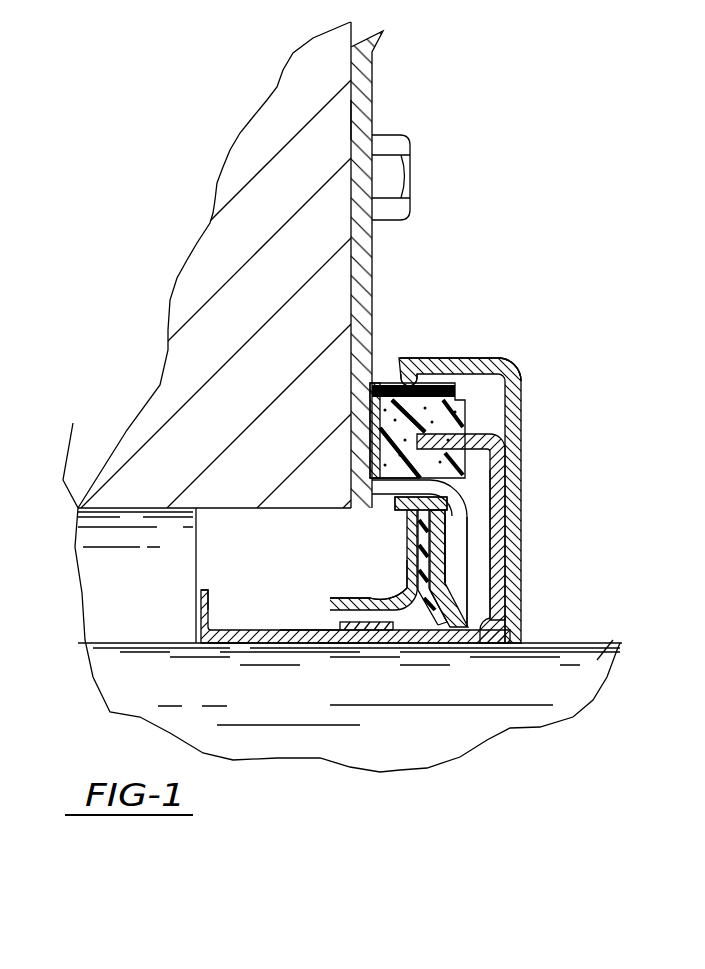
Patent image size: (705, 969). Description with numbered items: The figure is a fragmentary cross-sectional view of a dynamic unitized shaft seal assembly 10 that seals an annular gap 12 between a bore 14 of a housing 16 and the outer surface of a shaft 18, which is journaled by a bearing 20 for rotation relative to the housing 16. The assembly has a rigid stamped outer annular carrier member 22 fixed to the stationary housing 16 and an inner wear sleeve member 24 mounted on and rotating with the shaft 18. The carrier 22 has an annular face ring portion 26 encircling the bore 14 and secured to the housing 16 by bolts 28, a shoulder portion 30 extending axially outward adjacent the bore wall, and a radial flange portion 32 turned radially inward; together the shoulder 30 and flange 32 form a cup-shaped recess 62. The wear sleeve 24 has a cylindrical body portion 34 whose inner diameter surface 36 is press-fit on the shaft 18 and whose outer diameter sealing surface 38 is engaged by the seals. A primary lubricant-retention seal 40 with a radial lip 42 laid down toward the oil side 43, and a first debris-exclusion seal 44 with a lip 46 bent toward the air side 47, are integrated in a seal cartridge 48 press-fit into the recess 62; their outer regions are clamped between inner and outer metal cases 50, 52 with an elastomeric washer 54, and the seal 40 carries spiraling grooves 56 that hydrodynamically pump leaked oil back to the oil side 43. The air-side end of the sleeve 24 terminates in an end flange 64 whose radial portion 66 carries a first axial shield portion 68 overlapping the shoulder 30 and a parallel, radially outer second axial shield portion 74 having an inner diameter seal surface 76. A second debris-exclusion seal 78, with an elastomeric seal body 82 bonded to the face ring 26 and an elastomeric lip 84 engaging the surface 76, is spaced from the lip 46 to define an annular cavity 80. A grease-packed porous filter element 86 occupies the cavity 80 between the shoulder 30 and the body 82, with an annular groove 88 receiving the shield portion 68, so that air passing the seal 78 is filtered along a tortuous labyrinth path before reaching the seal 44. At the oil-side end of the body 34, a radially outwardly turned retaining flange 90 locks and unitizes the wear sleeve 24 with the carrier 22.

The shaft seal assembly 10 is at (592, 238).
The annular gap 12 is at (207, 545).
The bore 14 is at (168, 508).
The housing 16 is at (227, 222).
The shaft 18 is at (620, 643).
The bearing 20 is at (93, 540).
The outer annular carrier member 22 is at (392, 82).
The wear sleeve member 24 is at (228, 662).
The face ring portion 26 is at (363, 117).
The bolts 28 is at (393, 182).
The shoulder portion 30 is at (372, 470).
The radial flange portion 32 is at (455, 535).
The cylindrical body portion 34 is at (310, 635).
The inner diameter surface 36 is at (337, 633).
The sealing surface 38 is at (350, 630).
The primary lubricant-retention seal 40 is at (410, 550).
The radial lip 42 is at (405, 600).
The oil side 43 is at (287, 551).
The first debris-exclusion seal 44 is at (443, 598).
The lip 46 is at (448, 627).
The air side 47 is at (657, 401).
The seal cartridge 48 is at (466, 572).
The inner metal case 50 is at (397, 590).
The outer metal case 52 is at (445, 605).
The elastomeric washer 54 is at (470, 520).
The spiraling grooves 56 is at (390, 633).
The cup-shaped recess 62 is at (400, 508).
The end flange 64 is at (536, 463).
The radial portion 66 is at (492, 542).
The first axial shield portion 68 is at (517, 427).
The second axial shield portion 74 is at (473, 363).
The inner diameter seal surface 76 is at (405, 378).
The second debris-exclusion seal 78 is at (372, 402).
The annular cavity 80 is at (523, 380).
The elastomeric seal body 82 is at (352, 392).
The elastomeric lip 84 is at (443, 368).
The porous filter element 86 is at (372, 425).
The annular groove 88 is at (375, 445).
The retaining flange 90 is at (200, 593).